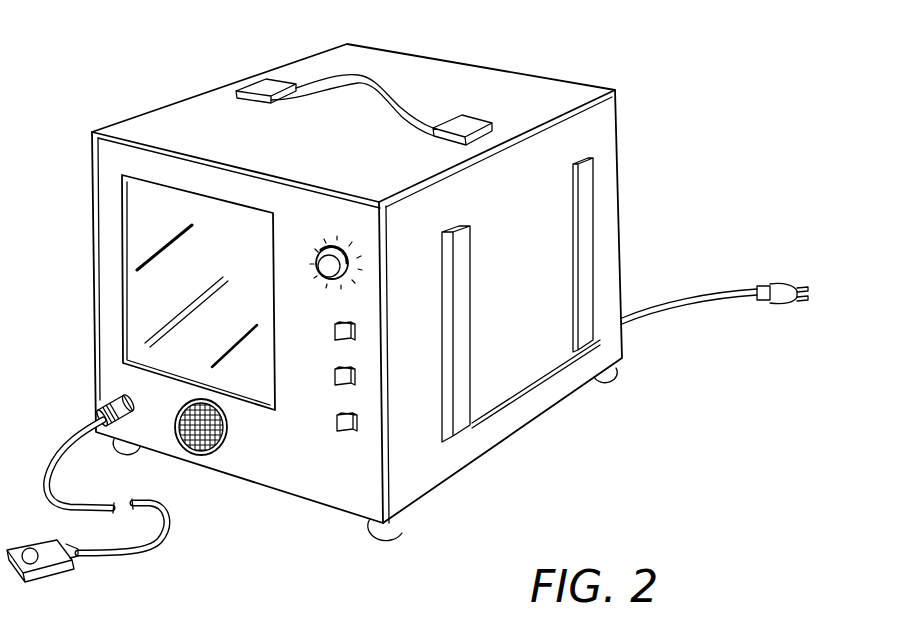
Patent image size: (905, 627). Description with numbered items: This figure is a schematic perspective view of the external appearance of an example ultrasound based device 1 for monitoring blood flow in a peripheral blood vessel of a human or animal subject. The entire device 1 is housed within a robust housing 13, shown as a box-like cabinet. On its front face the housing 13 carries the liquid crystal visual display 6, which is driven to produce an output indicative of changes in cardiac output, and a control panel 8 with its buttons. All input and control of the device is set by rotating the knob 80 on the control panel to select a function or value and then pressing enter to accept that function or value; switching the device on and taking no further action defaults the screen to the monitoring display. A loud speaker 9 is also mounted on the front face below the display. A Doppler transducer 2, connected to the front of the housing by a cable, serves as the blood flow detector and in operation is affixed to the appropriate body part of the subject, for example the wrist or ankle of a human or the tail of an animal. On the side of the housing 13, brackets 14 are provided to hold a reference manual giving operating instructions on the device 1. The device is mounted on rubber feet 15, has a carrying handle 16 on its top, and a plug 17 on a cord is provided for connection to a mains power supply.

The device 1 is at (670, 180).
The Doppler transducer 2 is at (57, 575).
The liquid crystal visual display 6 is at (157, 285).
The control panel 8 is at (307, 445).
The loud speaker 9 is at (216, 448).
The housing 13 is at (135, 128).
The brackets 14 is at (467, 397).
The rubber feet 15 is at (397, 528).
The carrying handle 16 is at (407, 105).
The plug 17 is at (790, 305).
The knob 80 is at (320, 264).